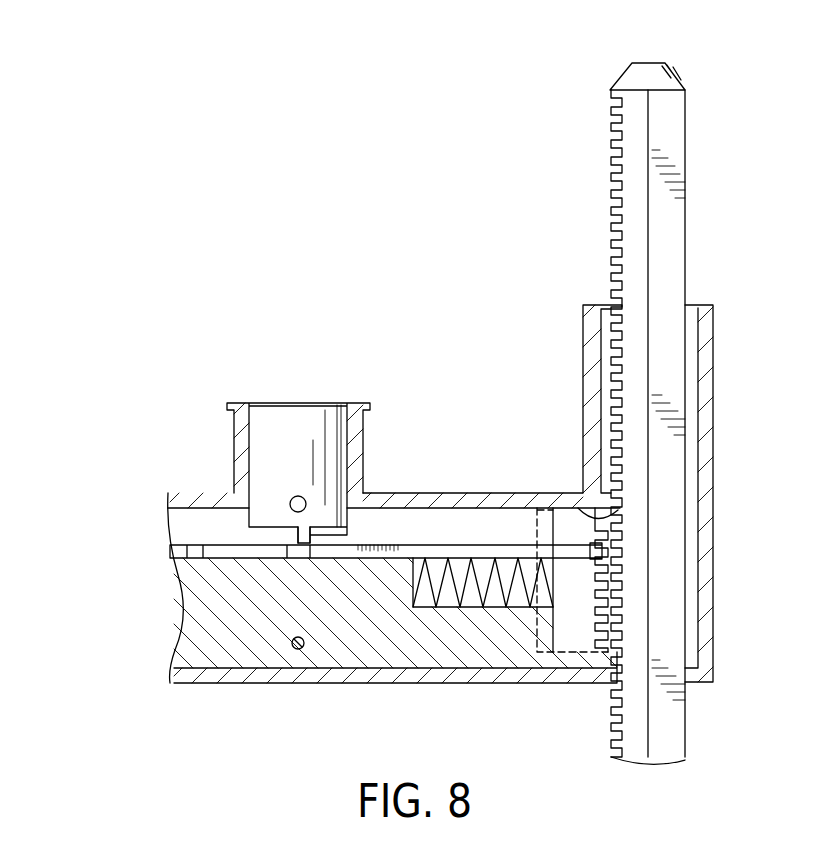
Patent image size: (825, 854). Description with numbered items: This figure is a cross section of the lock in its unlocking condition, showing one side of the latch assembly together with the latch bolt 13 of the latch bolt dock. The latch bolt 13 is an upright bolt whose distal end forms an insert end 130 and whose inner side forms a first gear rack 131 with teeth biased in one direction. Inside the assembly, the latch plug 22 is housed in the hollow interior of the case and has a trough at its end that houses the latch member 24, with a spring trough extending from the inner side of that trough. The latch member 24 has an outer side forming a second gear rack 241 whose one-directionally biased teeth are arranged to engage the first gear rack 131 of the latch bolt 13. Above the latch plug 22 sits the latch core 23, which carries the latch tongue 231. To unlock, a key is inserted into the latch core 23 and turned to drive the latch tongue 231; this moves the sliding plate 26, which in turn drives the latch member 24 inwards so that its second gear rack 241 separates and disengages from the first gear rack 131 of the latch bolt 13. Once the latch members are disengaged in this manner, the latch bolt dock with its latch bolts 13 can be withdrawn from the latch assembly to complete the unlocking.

The latch bolt 13 is at (673, 218).
The insert end 130 is at (660, 83).
The first gear rack 131 is at (582, 520).
The latch plug 22 is at (178, 642).
The latch core 23 is at (300, 413).
The latch tongue 231 is at (288, 542).
The latch member 24 is at (567, 637).
The second gear rack 241 is at (602, 608).
The sliding plate 26 is at (173, 549).